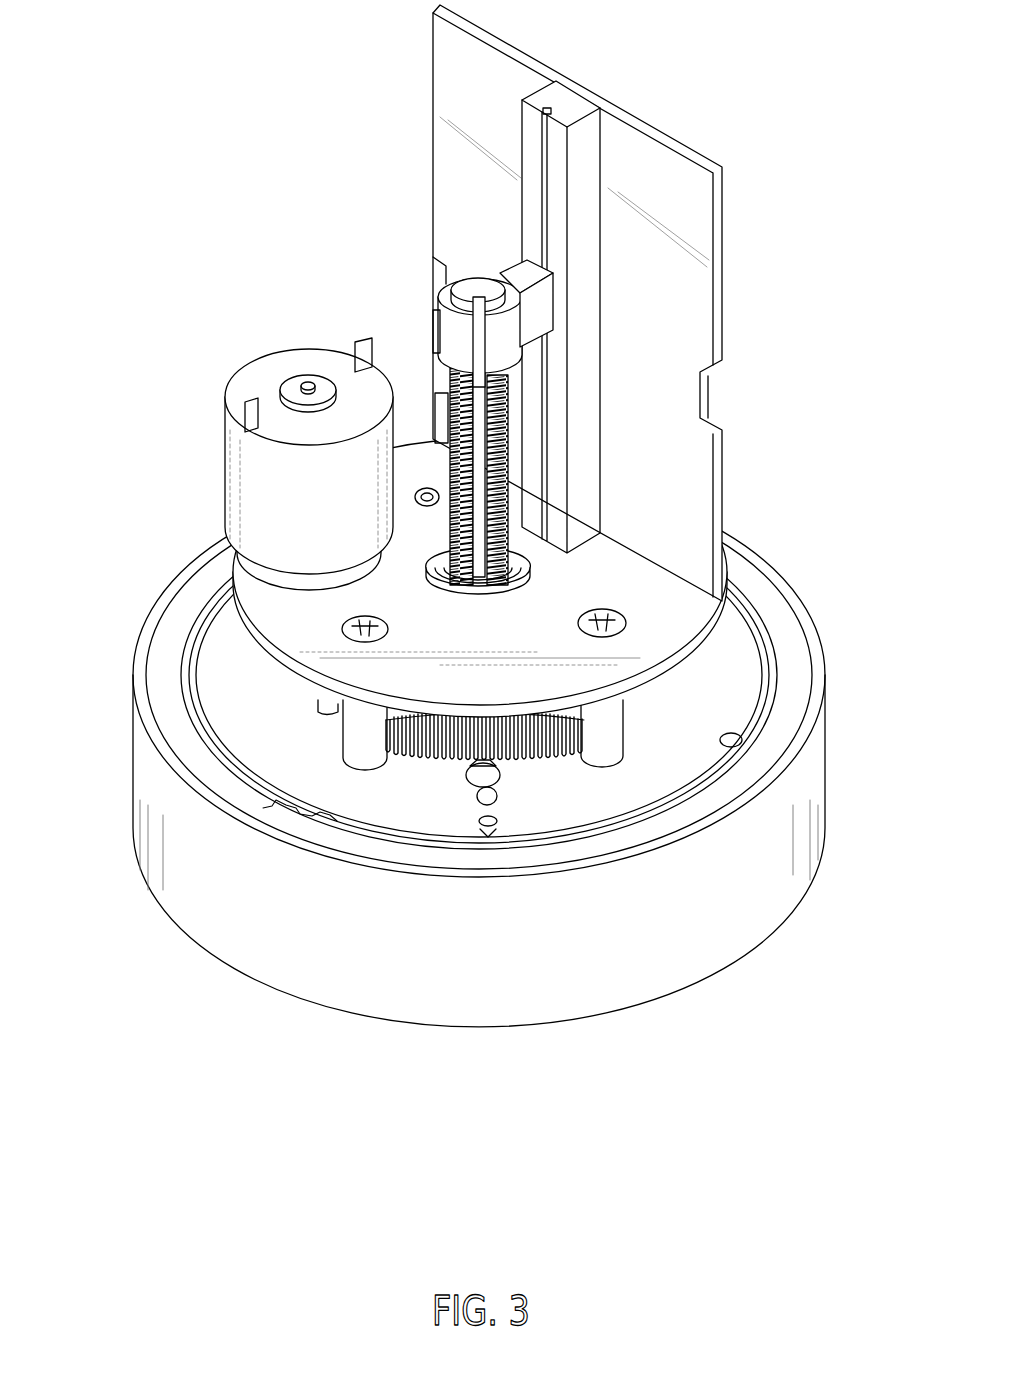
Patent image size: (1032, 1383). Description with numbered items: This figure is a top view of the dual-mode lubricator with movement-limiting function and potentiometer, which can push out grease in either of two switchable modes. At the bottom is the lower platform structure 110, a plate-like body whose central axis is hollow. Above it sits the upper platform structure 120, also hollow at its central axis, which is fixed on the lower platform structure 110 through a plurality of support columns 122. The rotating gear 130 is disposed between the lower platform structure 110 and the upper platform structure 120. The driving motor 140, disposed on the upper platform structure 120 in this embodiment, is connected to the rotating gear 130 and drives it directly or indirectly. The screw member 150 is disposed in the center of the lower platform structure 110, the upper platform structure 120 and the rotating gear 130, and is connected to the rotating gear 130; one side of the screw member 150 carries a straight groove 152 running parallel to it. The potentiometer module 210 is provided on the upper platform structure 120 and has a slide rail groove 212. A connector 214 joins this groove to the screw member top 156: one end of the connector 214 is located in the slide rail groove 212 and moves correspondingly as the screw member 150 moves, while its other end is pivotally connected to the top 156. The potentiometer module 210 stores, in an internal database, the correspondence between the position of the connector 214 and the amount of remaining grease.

The lower platform structure 110 is at (565, 807).
The upper platform structure 120 is at (582, 660).
The support columns 122 is at (363, 737).
The rotating gear 130 is at (427, 760).
The driving motor 140 is at (243, 470).
The screw member 150 is at (515, 545).
The straight groove 152 is at (475, 458).
The screw member top 156 is at (440, 282).
The potentiometer module 210 is at (480, 122).
The slide rail groove 212 is at (542, 152).
The connector 214 is at (517, 273).